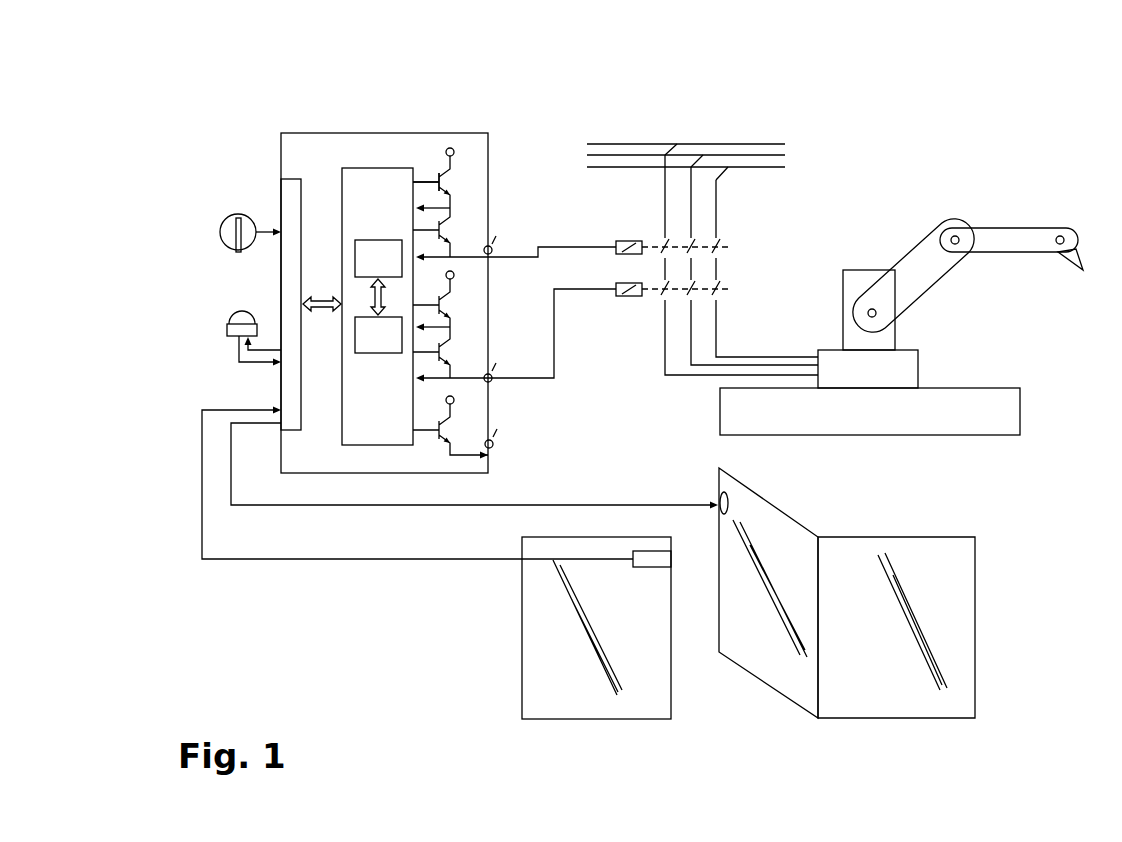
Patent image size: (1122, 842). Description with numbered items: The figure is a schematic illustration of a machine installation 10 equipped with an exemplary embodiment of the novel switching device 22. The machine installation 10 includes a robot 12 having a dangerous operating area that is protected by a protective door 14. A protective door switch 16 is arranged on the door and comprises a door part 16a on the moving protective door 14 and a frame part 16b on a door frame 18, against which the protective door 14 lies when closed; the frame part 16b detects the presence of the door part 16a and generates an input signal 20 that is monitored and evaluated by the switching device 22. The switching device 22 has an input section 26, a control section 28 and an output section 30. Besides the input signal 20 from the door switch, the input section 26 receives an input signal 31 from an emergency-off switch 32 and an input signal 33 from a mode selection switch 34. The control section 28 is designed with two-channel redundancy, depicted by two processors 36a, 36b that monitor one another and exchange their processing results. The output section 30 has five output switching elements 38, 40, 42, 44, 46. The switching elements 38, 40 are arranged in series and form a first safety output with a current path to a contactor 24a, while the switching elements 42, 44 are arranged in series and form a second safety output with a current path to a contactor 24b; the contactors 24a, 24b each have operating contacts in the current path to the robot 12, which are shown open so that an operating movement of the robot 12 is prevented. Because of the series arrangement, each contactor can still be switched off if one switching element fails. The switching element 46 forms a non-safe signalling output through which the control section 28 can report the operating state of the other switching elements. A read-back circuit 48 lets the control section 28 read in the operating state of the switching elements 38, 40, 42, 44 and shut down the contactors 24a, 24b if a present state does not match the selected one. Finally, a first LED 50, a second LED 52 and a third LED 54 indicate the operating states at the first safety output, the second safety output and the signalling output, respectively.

The machine installation 10 is at (1010, 110).
The robot 12 is at (920, 280).
The protective door 14 is at (762, 668).
The protective door switch 16 is at (521, 530).
The door part 16a is at (733, 494).
The frame part 16b is at (653, 568).
The door frame 18 is at (597, 720).
The input signal 20 is at (400, 560).
The switching device 22 is at (312, 133).
The first contactor 24a is at (630, 240).
The second contactor 24b is at (630, 297).
The input section 26 is at (290, 187).
The control section 28 is at (372, 168).
The output section 30 is at (476, 143).
The input signal 31 is at (235, 357).
The emergency-off switch 32 is at (226, 329).
The input signal 33 is at (258, 238).
The mode selection switch 34 is at (220, 231).
The first processor 36a is at (380, 240).
The second processor 36b is at (380, 353).
The output switching element 38 is at (455, 182).
The output switching element 40 is at (455, 225).
The output switching element 42 is at (455, 304).
The output switching element 44 is at (455, 347).
The output switching element 46 is at (445, 437).
The read-back circuit 48 is at (438, 175).
The first LED 50 is at (493, 248).
The second LED 52 is at (493, 380).
The third LED 54 is at (494, 446).